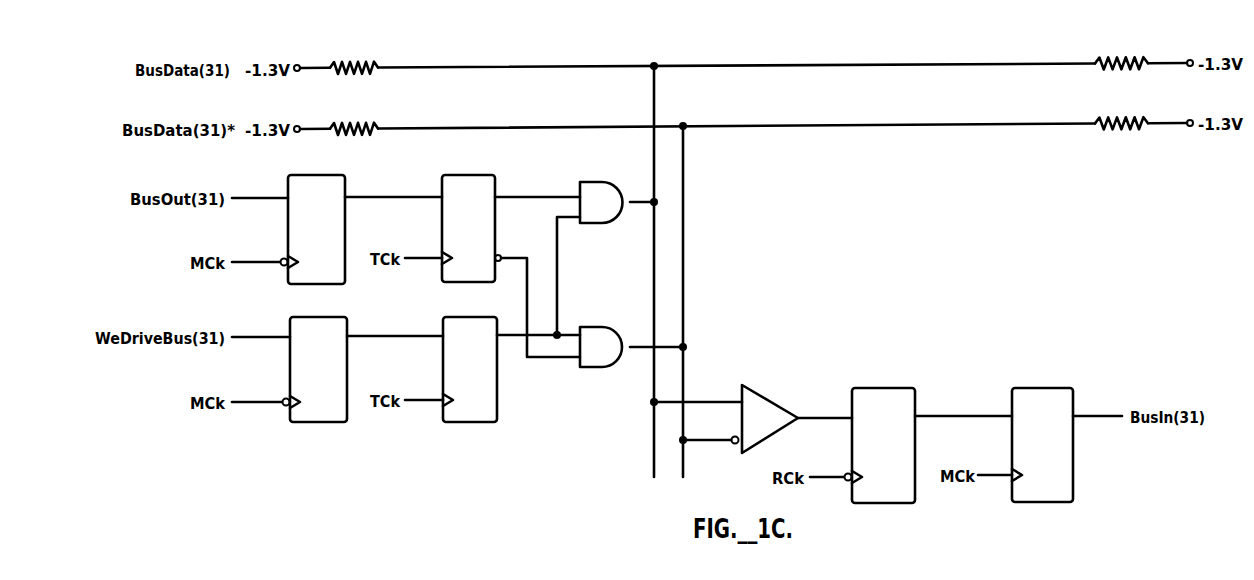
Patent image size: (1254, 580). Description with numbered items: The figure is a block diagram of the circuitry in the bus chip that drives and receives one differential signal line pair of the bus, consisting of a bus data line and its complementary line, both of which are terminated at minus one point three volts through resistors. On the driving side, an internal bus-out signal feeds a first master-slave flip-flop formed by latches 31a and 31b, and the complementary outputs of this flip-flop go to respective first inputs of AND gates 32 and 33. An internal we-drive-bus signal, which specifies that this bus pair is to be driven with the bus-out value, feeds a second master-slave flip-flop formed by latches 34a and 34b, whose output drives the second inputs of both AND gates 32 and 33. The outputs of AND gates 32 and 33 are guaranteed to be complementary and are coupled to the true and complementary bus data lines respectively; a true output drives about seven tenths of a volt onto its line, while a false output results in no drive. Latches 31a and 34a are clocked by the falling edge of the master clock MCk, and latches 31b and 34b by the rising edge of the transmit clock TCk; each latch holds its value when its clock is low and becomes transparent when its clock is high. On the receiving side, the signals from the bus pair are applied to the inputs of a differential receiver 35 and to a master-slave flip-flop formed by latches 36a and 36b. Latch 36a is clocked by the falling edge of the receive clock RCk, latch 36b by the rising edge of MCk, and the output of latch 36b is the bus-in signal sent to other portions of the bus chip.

The latch 31a is at (315, 176).
The latch 31b is at (467, 175).
The AND gate 32 is at (598, 182).
The AND gate 33 is at (596, 327).
The latch 34a is at (319, 317).
The latch 34b is at (469, 317).
The differential receiver 35 is at (764, 400).
The latch 36a is at (884, 388).
The latch 36b is at (1046, 388).